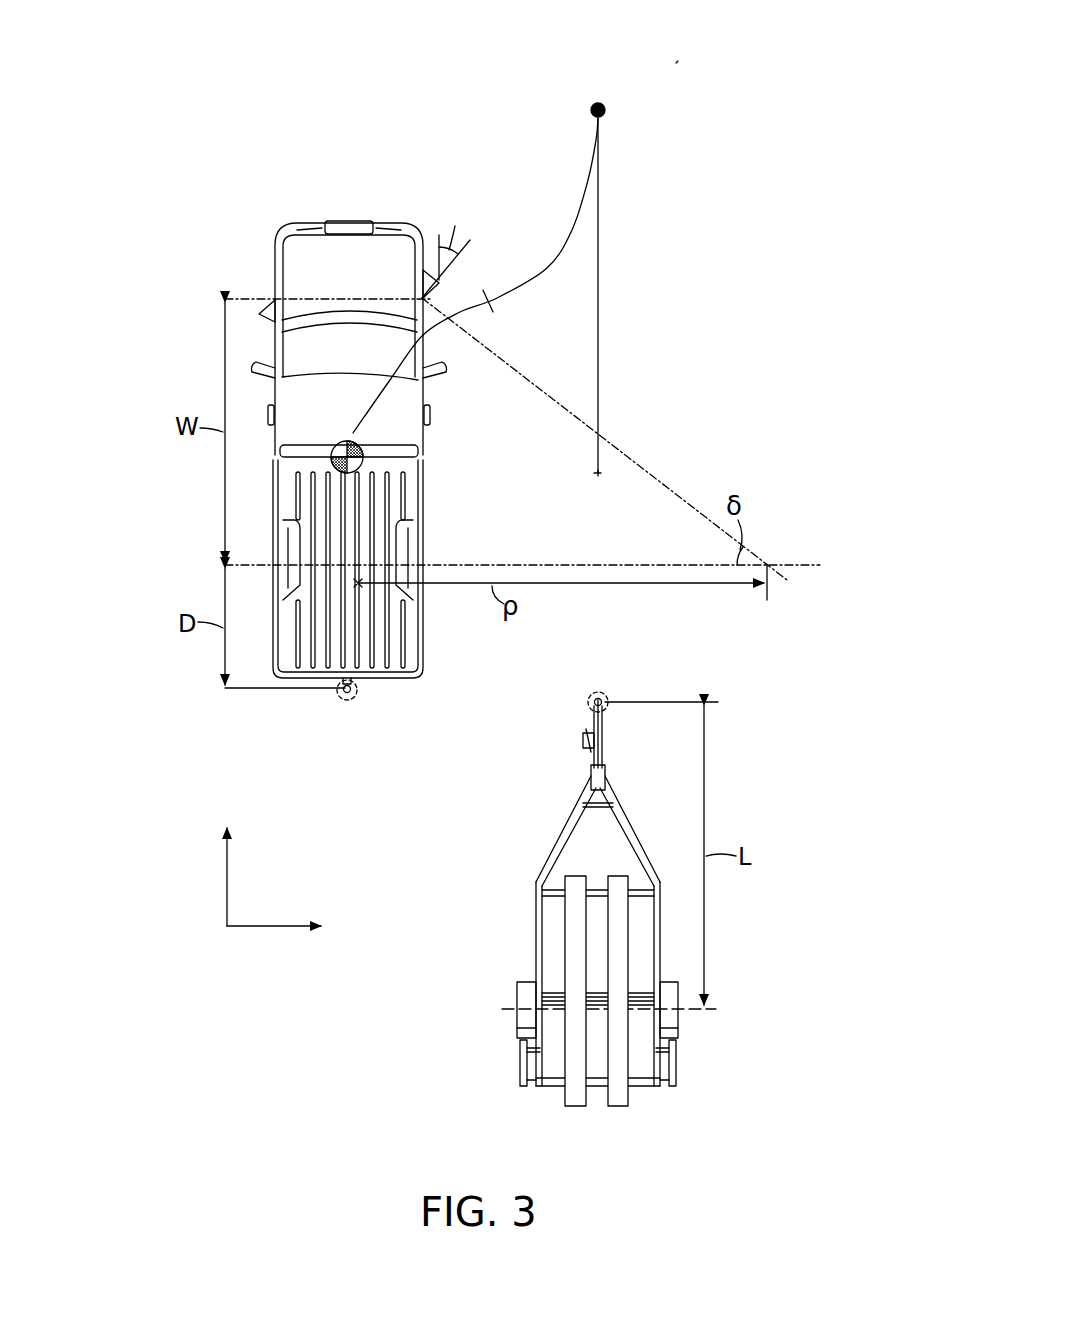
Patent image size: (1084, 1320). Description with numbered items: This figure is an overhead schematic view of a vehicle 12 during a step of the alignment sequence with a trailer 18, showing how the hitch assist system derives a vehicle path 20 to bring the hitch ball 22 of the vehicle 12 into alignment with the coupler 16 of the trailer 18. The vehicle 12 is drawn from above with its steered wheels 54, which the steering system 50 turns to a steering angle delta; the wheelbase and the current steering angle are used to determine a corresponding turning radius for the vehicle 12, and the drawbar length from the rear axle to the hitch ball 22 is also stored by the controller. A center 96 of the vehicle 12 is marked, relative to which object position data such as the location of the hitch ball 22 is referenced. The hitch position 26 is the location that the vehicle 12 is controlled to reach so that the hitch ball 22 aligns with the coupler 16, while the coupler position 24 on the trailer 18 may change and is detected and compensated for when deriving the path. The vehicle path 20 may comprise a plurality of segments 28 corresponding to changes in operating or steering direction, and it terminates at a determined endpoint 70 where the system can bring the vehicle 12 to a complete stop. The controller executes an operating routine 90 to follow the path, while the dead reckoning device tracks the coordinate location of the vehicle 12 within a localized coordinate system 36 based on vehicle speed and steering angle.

The vehicle 12 is at (250, 224).
The steered wheels 54 is at (262, 312).
The steering system 50 is at (441, 334).
The center 96 is at (336, 468).
The hitch ball 22 is at (341, 692).
The hitch position 26 is at (357, 698).
The segments 28 is at (550, 271).
The endpoint 70 is at (596, 475).
The operating routine 90 is at (593, 103).
The vehicle path 20 is at (679, 62).
The trailer 18 is at (534, 930).
The coupler 16 is at (604, 707).
The coupler position 24 is at (606, 698).
The localized coordinate system 36 is at (278, 950).